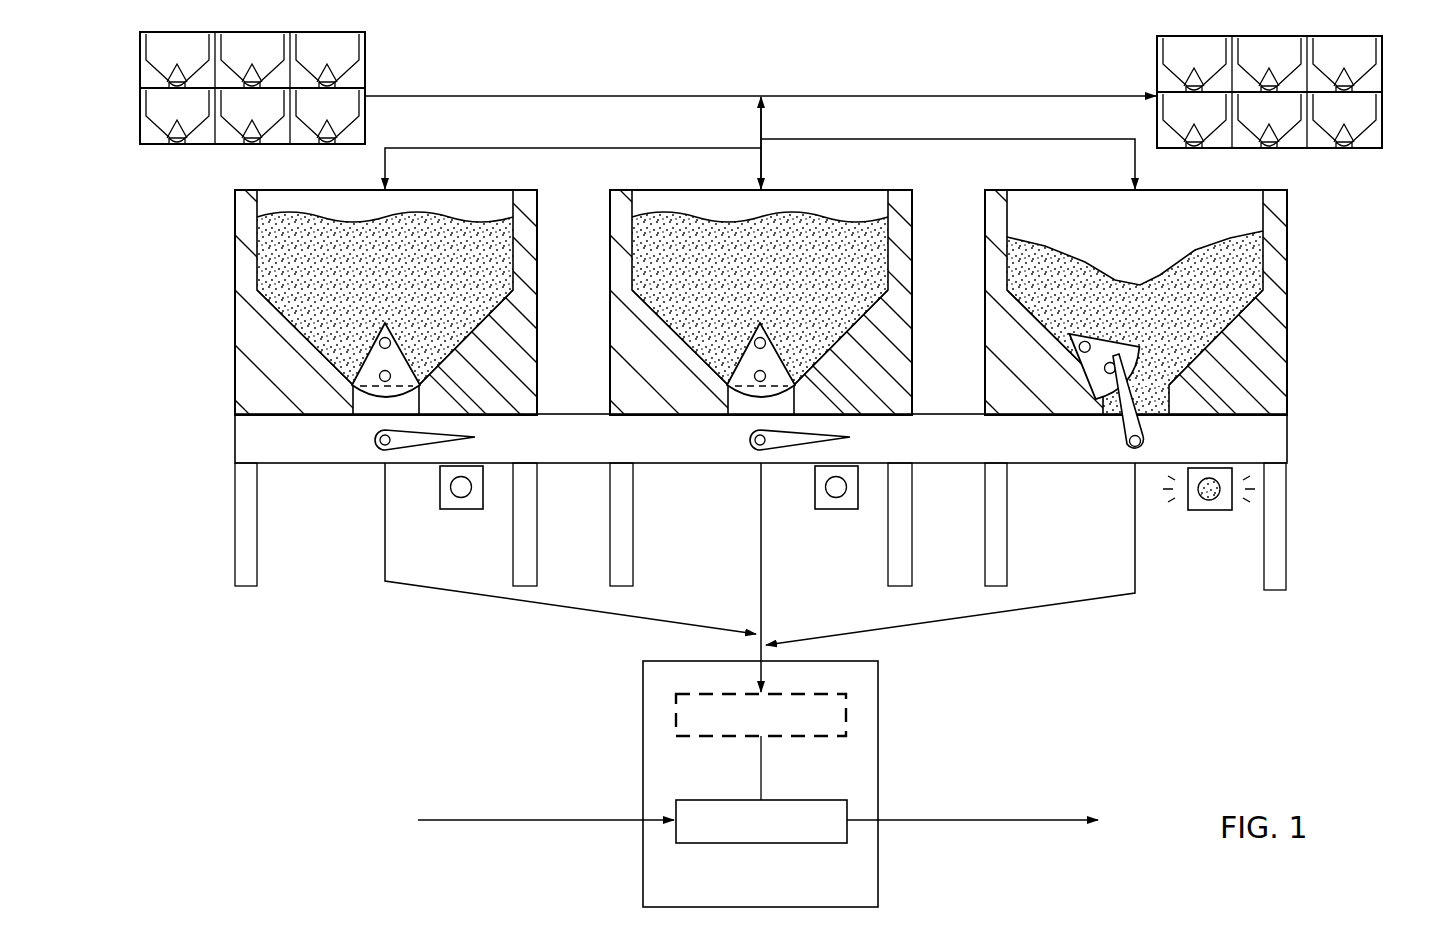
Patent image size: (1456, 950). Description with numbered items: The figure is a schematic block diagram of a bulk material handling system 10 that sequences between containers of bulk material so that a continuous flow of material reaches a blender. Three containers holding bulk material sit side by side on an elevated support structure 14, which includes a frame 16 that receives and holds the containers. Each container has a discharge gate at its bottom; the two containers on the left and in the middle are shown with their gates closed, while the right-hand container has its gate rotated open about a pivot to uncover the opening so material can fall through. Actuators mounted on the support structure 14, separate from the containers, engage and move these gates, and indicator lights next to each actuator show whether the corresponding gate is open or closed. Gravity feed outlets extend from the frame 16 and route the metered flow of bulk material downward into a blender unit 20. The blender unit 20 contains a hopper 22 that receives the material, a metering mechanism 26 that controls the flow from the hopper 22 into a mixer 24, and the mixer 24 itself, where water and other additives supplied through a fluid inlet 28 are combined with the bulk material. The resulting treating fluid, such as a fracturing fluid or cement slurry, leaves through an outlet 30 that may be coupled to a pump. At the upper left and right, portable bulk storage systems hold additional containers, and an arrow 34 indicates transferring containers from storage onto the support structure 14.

The bulk material handling system 10 is at (140, 335).
The support structure 14 is at (200, 524).
The frame 16 is at (1286, 530).
The blender unit 20 is at (645, 845).
The hopper 22 is at (785, 737).
The mixer 24 is at (785, 844).
The metering mechanism 26 is at (760, 770).
The fluid inlet 28 is at (530, 821).
The outlet 30 is at (1035, 821).
The arrow 34 is at (662, 95).